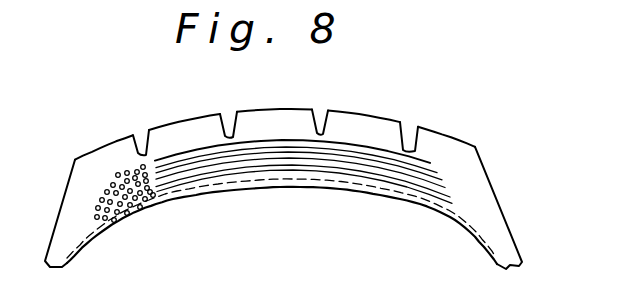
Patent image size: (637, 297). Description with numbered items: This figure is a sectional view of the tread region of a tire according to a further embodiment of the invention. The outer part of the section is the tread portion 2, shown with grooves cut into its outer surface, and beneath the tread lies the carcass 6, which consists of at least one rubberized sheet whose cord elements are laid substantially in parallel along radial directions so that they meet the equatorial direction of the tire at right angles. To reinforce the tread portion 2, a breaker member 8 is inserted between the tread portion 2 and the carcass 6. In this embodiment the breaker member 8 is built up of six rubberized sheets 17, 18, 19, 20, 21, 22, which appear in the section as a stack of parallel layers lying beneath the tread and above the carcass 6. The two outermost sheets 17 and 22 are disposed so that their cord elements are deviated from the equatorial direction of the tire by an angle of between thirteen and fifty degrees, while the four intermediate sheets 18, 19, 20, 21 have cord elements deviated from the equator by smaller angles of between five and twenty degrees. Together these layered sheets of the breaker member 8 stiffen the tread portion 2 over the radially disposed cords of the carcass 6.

The tread portion 2 is at (351, 112).
The breaker member 8 is at (344, 168).
The sheet 17 is at (433, 161).
The sheet 18 is at (438, 174).
The sheet 19 is at (443, 186).
The sheet 20 is at (448, 193).
The sheet 21 is at (450, 197).
The sheet 22 is at (448, 203).
The carcass 6 is at (468, 232).